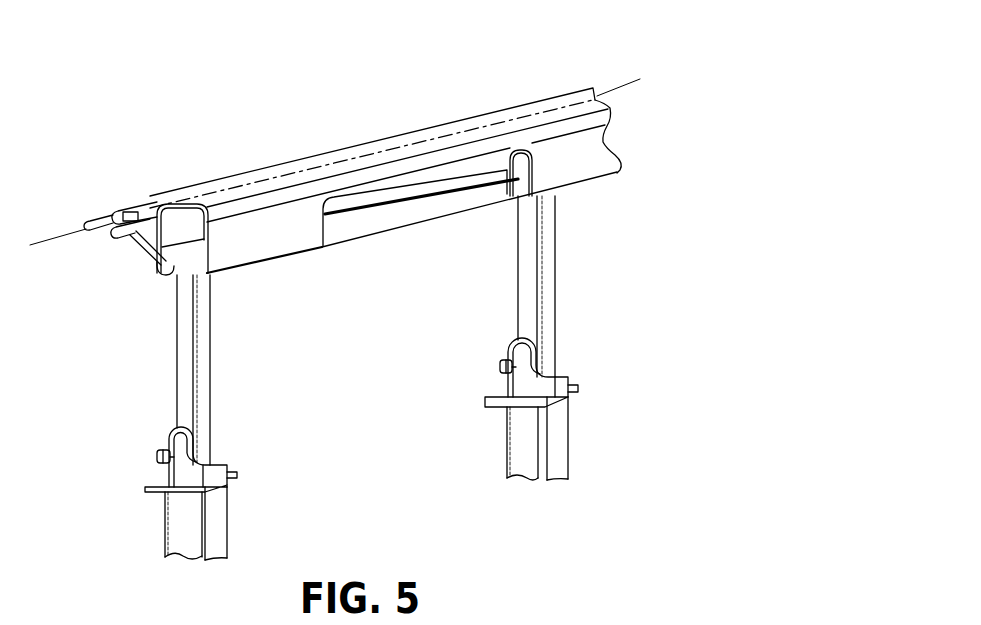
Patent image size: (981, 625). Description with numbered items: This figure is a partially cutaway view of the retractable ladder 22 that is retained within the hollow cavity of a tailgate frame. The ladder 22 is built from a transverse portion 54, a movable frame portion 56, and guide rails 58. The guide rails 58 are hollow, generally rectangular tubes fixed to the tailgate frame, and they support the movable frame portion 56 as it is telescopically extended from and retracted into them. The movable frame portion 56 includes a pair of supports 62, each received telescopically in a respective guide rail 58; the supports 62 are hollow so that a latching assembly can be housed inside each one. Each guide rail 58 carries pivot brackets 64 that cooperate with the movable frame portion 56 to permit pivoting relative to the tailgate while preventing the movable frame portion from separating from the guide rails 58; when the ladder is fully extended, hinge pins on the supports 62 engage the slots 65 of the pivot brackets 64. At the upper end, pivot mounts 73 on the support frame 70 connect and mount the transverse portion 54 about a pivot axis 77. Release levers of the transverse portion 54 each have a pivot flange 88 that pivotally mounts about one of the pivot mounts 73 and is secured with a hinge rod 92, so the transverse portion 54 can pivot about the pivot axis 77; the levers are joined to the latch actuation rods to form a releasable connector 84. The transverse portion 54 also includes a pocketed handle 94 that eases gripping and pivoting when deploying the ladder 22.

The ladder 22 is at (345, 160).
The transverse portion 54 is at (262, 172).
The movable frame portion 56 is at (402, 378).
The guide rails 58 is at (222, 530).
The supports 62 is at (205, 335).
The pivot brackets 64 is at (171, 428).
The slots 65 is at (157, 458).
The support frame 70 is at (166, 270).
The pivot mounts 73 is at (124, 237).
The pivot axis 77 is at (622, 88).
The releasable connector 84 is at (143, 213).
The pivot flange 88 is at (123, 208).
The hinge rod 92 is at (88, 229).
The pocketed handle 94 is at (333, 236).